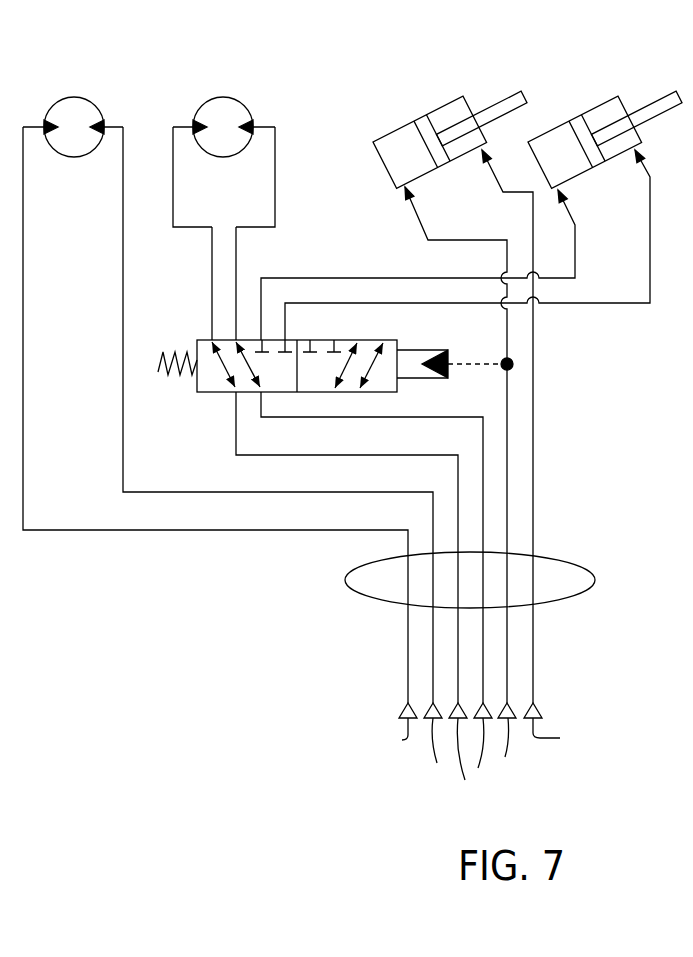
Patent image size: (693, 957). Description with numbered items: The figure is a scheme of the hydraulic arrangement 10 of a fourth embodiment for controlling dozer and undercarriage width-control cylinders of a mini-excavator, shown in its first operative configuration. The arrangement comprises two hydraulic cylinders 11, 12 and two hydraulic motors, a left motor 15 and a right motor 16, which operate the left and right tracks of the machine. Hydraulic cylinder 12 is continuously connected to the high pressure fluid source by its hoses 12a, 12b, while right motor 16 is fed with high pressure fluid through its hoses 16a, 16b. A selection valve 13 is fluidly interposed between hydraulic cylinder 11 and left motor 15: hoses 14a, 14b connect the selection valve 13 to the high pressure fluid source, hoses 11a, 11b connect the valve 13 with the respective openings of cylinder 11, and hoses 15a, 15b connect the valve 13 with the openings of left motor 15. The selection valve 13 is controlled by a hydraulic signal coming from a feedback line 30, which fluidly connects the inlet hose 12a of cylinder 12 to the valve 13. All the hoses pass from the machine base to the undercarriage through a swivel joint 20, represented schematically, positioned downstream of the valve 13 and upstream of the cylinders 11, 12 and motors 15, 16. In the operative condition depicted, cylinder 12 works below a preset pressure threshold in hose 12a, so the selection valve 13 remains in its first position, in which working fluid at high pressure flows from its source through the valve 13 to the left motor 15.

The hydraulic arrangement 10 is at (208, 604).
The hydraulic cylinder 11 is at (588, 110).
The hose 11a is at (575, 240).
The hose 11b is at (650, 242).
The hydraulic cylinder 12 is at (400, 126).
The inlet hose 12a is at (421, 228).
The hose 12b is at (496, 178).
The selection valve 13 is at (408, 327).
The hose 14a is at (458, 635).
The hose 14b is at (485, 663).
The left motor 15 is at (223, 97).
The hose 15a is at (190, 230).
The hose 15b is at (257, 230).
The right motor 16 is at (72, 97).
The hose 16a is at (408, 630).
The hose 16b is at (433, 667).
The swivel joint 20 is at (565, 573).
The feedback line 30 is at (477, 367).